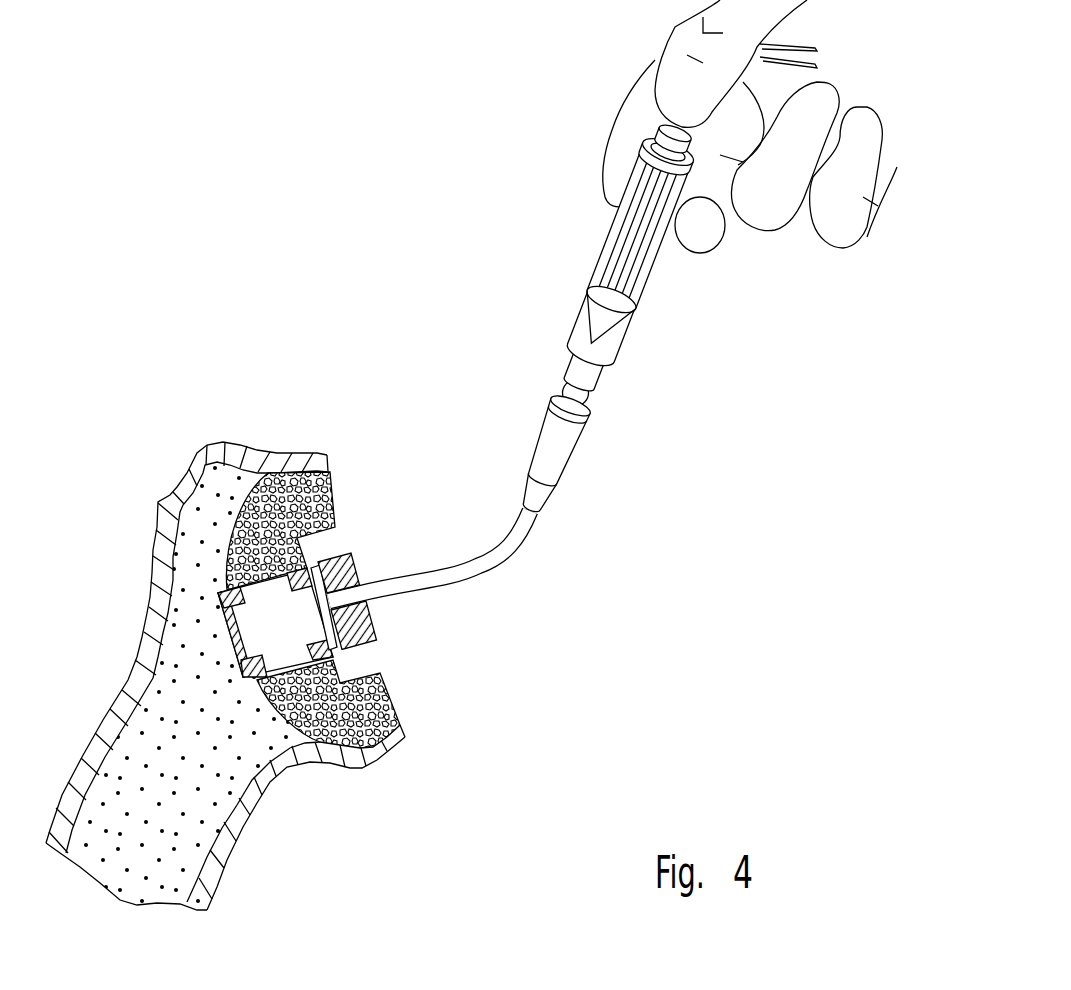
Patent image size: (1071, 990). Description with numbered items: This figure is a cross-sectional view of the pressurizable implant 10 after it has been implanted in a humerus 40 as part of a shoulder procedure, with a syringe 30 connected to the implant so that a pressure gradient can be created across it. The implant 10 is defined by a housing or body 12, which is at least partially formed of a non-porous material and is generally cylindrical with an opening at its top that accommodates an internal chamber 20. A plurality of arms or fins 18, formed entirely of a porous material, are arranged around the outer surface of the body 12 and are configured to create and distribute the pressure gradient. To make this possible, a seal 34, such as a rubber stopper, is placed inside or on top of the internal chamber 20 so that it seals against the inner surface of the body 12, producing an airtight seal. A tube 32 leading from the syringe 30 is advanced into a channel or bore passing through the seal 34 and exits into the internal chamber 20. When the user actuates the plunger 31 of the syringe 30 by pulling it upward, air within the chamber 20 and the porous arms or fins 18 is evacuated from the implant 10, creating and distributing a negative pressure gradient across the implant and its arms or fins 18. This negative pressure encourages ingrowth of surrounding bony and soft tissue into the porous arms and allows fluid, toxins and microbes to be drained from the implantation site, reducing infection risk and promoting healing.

The pressurizable implant 10 is at (294, 574).
The body 12 is at (350, 545).
The arms or fins 18 is at (337, 475).
The internal chamber 20 is at (277, 627).
The syringe 30 is at (607, 325).
The plunger 31 is at (660, 123).
The tube 32 is at (517, 537).
The seal 34 is at (360, 582).
The humerus 40 is at (120, 817).